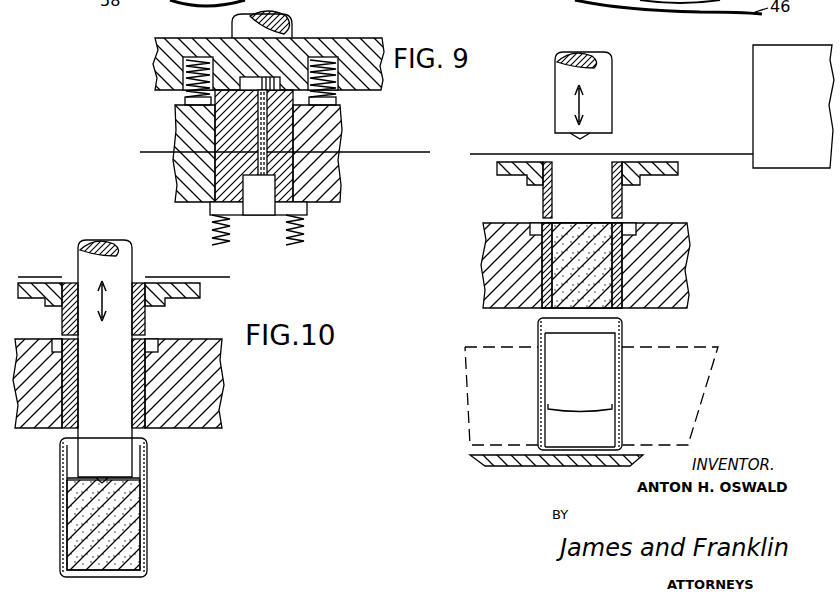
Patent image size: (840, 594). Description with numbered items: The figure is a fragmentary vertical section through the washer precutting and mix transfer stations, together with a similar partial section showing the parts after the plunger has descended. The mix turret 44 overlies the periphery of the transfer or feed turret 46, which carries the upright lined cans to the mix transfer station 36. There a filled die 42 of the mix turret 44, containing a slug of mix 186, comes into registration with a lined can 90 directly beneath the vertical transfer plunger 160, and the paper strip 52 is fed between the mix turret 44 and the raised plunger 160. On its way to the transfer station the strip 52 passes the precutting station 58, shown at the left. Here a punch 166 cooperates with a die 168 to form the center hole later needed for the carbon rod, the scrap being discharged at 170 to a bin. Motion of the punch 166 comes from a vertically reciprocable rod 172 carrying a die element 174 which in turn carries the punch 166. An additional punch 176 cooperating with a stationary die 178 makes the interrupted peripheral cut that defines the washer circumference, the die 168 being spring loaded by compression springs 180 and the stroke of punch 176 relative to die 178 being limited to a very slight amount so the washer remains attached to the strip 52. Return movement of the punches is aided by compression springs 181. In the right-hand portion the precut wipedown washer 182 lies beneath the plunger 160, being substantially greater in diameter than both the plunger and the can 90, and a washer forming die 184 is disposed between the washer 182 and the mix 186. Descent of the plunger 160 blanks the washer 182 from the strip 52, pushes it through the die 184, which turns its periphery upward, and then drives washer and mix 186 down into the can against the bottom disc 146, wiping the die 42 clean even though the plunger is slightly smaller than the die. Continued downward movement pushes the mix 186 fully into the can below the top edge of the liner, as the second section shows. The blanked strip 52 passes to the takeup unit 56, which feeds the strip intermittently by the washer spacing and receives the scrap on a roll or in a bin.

In FIG. 9, the mix transfer station 36 is at (634, 131).
In FIG. 10, the mix transfer station 36 is at (66, 242).
In FIG. 9, the die 42 is at (622, 312).
In FIG. 10, the die 42 is at (103, 383).
In FIG. 9, the mix turret 44 is at (690, 258).
In FIG. 10, the mix turret 44 is at (118, 383).
In FIG. 9, the feed turret 46 is at (690, 356).
In FIG. 9, the paper strip 52 is at (366, 152).
In FIG. 10, the paper strip 52 is at (210, 277).
In FIG. 9, the takeup unit 56 is at (804, 90).
In FIG. 9, the precutting station 58 is at (252, 146).
In FIG. 9, the lined can 90 is at (624, 388).
In FIG. 10, the lined can 90 is at (148, 468).
In FIG. 9, the bottom disc 146 is at (564, 408).
In FIG. 9, the transfer plunger 160 is at (614, 92).
In FIG. 10, the transfer plunger 160 is at (134, 258).
In FIG. 9, the punch 166 is at (263, 77).
In FIG. 9, the die 168 is at (280, 215).
In FIG. 9, the scrap discharge 170 is at (272, 215).
In FIG. 9, the reciprocable rod 172 is at (284, 18).
In FIG. 9, the die element 174 is at (325, 40).
In FIG. 9, the additional punch 176 is at (340, 116).
In FIG. 9, the stationary die 178 is at (341, 172).
In FIG. 9, the compression springs 180 is at (212, 222).
In FIG. 9, the compression springs 181 is at (183, 96).
In FIG. 9, the wipedown washer 182 is at (610, 156).
In FIG. 10, the wipedown washer 182 is at (142, 488).
In FIG. 9, the washer forming die 184 is at (624, 198).
In FIG. 10, the washer forming die 184 is at (146, 320).
In FIG. 9, the slug of mix 186 is at (552, 310).
In FIG. 10, the slug of mix 186 is at (148, 520).